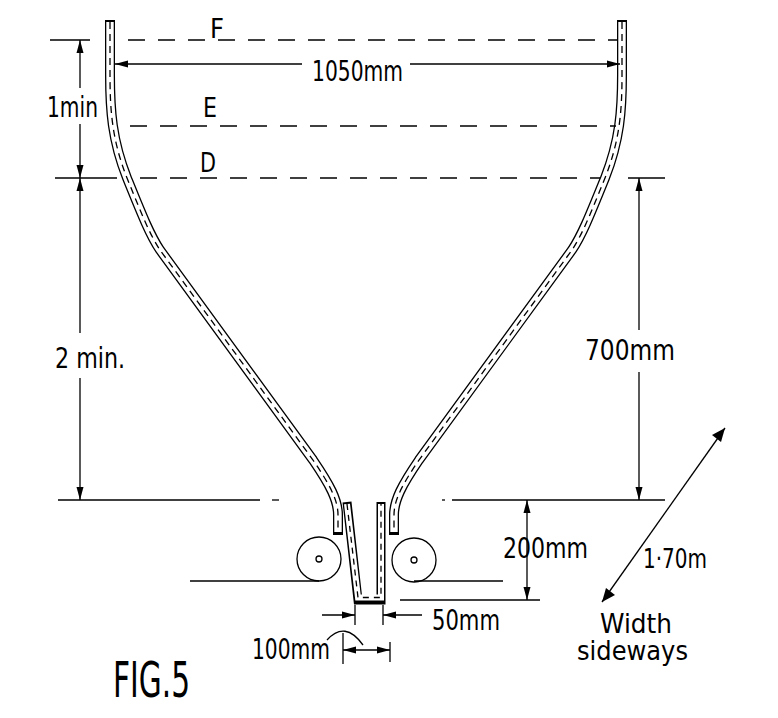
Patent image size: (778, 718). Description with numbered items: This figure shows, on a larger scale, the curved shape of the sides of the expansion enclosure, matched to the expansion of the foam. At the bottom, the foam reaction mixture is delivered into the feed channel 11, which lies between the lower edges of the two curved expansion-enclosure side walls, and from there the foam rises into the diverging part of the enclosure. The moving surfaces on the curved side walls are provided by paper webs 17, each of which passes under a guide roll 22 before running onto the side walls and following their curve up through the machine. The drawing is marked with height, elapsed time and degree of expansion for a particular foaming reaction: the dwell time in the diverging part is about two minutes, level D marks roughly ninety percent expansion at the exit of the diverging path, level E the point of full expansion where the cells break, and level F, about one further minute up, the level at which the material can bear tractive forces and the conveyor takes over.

The feed channel 11 is at (352, 588).
The paper web 17 is at (465, 581).
The guide roll 22 is at (297, 557).